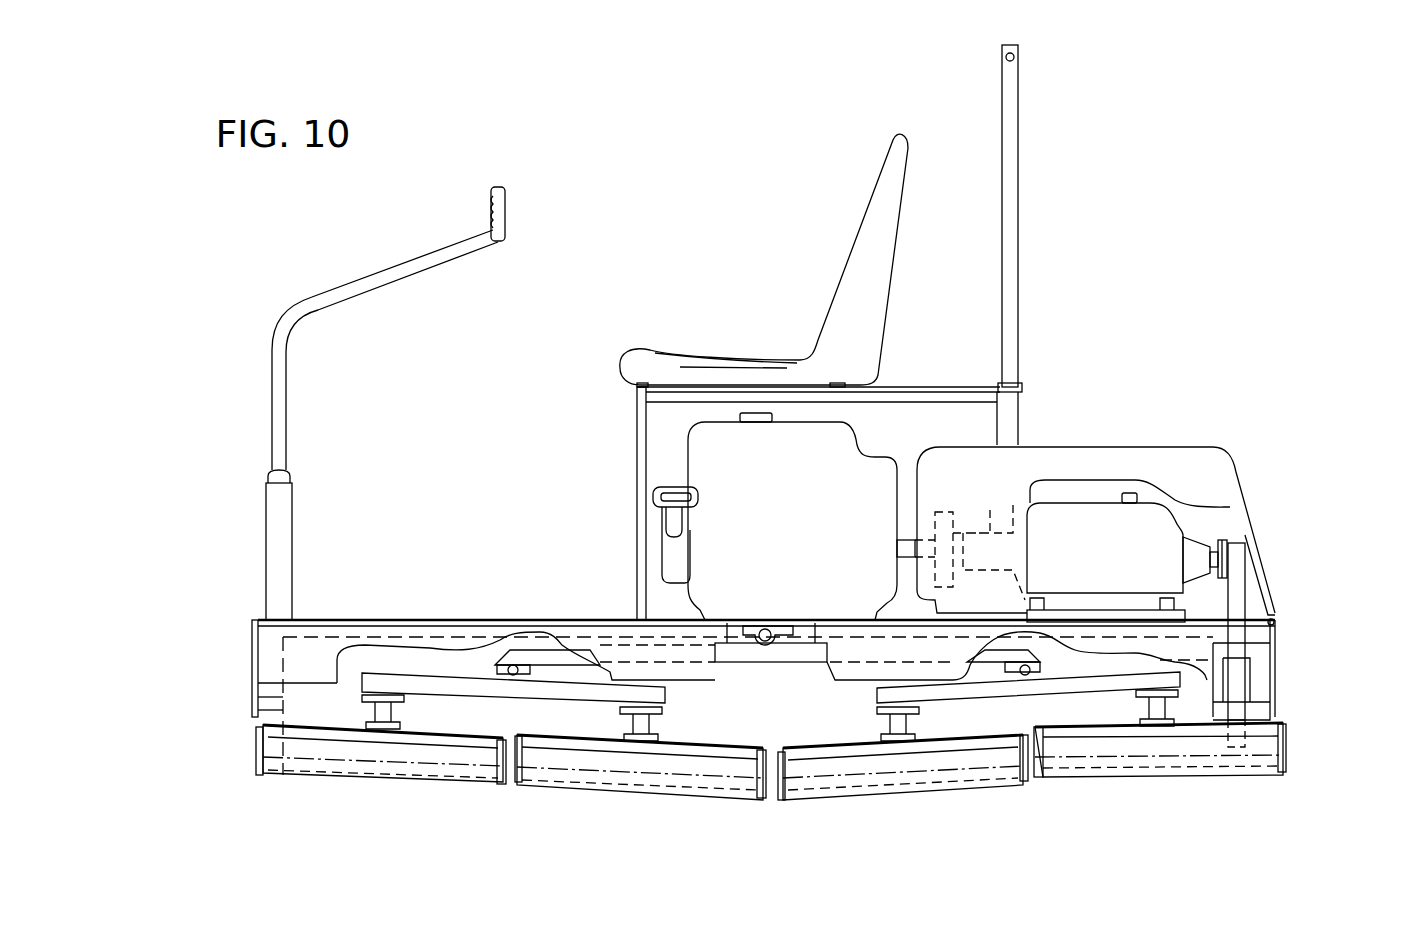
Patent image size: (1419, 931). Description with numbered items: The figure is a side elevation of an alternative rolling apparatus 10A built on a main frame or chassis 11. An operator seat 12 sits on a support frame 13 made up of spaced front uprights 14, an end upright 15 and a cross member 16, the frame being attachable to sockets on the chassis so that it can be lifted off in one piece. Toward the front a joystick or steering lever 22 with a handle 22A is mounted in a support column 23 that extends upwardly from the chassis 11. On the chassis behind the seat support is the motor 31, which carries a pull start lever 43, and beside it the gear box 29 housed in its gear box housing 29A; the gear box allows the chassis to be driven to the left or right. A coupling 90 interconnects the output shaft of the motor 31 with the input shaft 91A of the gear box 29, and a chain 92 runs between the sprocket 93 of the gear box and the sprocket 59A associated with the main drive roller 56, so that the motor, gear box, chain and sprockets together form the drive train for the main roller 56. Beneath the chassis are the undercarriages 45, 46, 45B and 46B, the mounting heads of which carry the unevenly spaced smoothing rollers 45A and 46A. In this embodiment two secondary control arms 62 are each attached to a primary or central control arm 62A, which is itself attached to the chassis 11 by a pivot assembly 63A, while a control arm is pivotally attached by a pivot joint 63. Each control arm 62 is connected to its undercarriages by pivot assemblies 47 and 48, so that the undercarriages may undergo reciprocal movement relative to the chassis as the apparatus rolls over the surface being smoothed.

The rolling apparatus 10A is at (710, 278).
The main frame or chassis 11 is at (406, 605).
The seat 12 is at (835, 283).
The support frame 13 is at (1043, 258).
The front uprights 14 is at (632, 440).
The end upright 15 is at (1010, 148).
The cross member 16 is at (942, 388).
The joystick or steering lever 22 is at (418, 268).
The handle 22A is at (502, 213).
The support column 23 is at (290, 540).
The gear box 29 is at (1000, 527).
The gear box housing 29A is at (1168, 450).
The motor 31 is at (767, 515).
The pull start lever 43 is at (652, 497).
The undercarriage 45 is at (252, 737).
The smoothing roller 45A is at (420, 765).
The undercarriage 45B is at (840, 750).
The undercarriage 46 is at (690, 745).
The smoothing roller 46A is at (668, 775).
The undercarriage 46B is at (1057, 728).
The pivot assembly 47 is at (378, 700).
The pivot assembly 48 is at (628, 718).
The main drive roller 56 is at (1262, 678).
The sprocket 59A is at (1250, 668).
The control arm 62 is at (440, 690).
The primary or central control arm 62A is at (746, 656).
The pivot joint 63 is at (1032, 664).
The pivot assembly 63A is at (767, 628).
The coupling 90 is at (945, 510).
The input shaft 91A is at (955, 535).
The chain 92 is at (1242, 610).
The sprocket 93 is at (1224, 545).